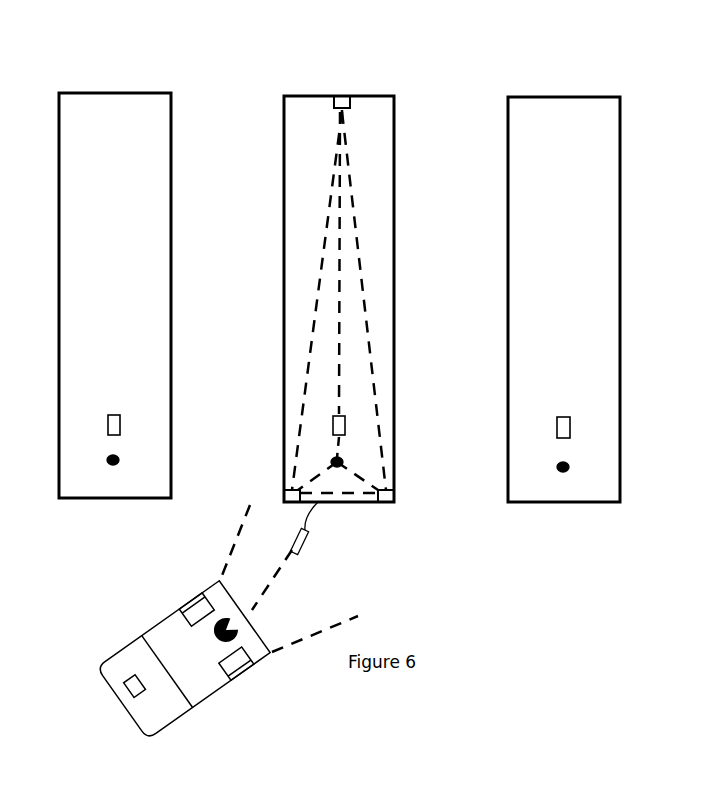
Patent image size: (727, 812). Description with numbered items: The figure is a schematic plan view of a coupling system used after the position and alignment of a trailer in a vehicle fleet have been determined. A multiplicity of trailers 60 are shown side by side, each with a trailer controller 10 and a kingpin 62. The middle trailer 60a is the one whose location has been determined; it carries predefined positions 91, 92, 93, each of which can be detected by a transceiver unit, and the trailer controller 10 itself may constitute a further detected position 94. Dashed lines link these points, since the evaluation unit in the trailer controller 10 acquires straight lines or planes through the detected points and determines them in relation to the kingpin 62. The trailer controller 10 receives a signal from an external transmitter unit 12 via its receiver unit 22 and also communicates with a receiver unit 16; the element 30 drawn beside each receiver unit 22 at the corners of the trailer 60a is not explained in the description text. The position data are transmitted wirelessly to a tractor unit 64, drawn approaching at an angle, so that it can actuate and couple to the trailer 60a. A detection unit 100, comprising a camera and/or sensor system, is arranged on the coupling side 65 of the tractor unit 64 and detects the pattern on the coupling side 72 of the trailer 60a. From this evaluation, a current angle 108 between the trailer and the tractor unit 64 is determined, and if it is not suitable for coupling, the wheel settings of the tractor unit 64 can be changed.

The trailer controller 10 is at (120, 425).
The transmitter unit 12 is at (127, 690).
The receiver unit 16 is at (121, 695).
The receiver unit 22 is at (323, 93).
The antenna 30 is at (334, 94).
The trailer 60 is at (130, 98).
The trailer whose location has been determined 60a is at (382, 92).
The kingpin 62 is at (113, 466).
The tractor unit 64 is at (237, 683).
The coupling side 65 is at (252, 614).
The coupling side 72 is at (375, 503).
The predefined position 91 is at (343, 94).
The predefined position 92 is at (392, 503).
The predefined position 93 is at (275, 503).
The detected position 94 is at (347, 417).
The detection unit 100 is at (360, 615).
The current angle 108 is at (302, 558).